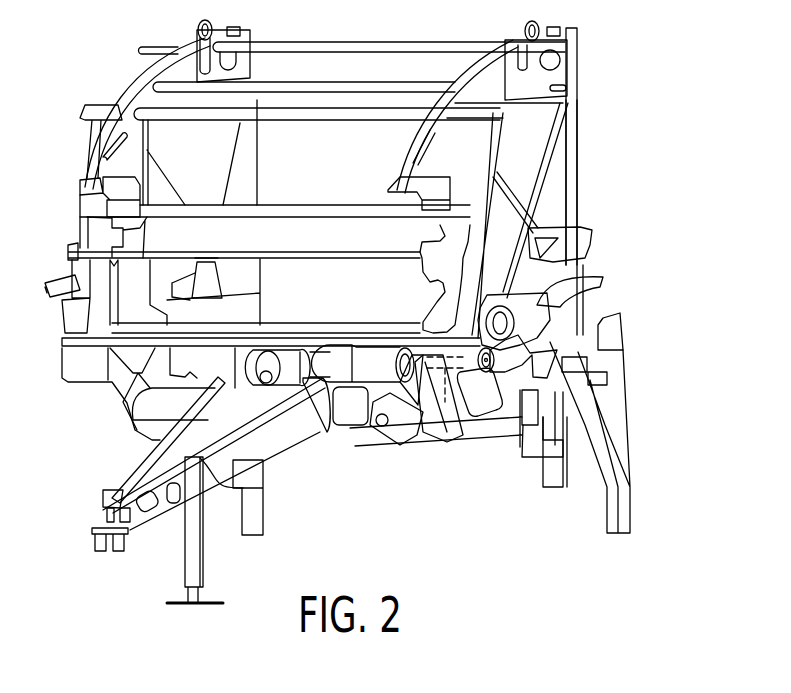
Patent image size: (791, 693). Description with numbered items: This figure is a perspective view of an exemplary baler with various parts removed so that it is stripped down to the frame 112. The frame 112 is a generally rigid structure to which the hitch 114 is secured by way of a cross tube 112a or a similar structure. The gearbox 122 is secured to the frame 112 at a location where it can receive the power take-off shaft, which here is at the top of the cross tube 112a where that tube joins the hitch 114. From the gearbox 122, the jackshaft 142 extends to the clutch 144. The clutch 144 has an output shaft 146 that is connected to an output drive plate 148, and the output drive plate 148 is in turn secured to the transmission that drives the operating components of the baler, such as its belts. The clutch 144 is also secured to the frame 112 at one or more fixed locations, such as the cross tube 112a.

The frame 112 is at (568, 160).
The cross tube 112a is at (362, 412).
The hitch 114 is at (132, 494).
The gearbox 122 is at (297, 350).
The jackshaft 142 is at (333, 360).
The clutch 144 is at (383, 367).
The output shaft 146 is at (468, 430).
The output drive plate 148 is at (495, 364).